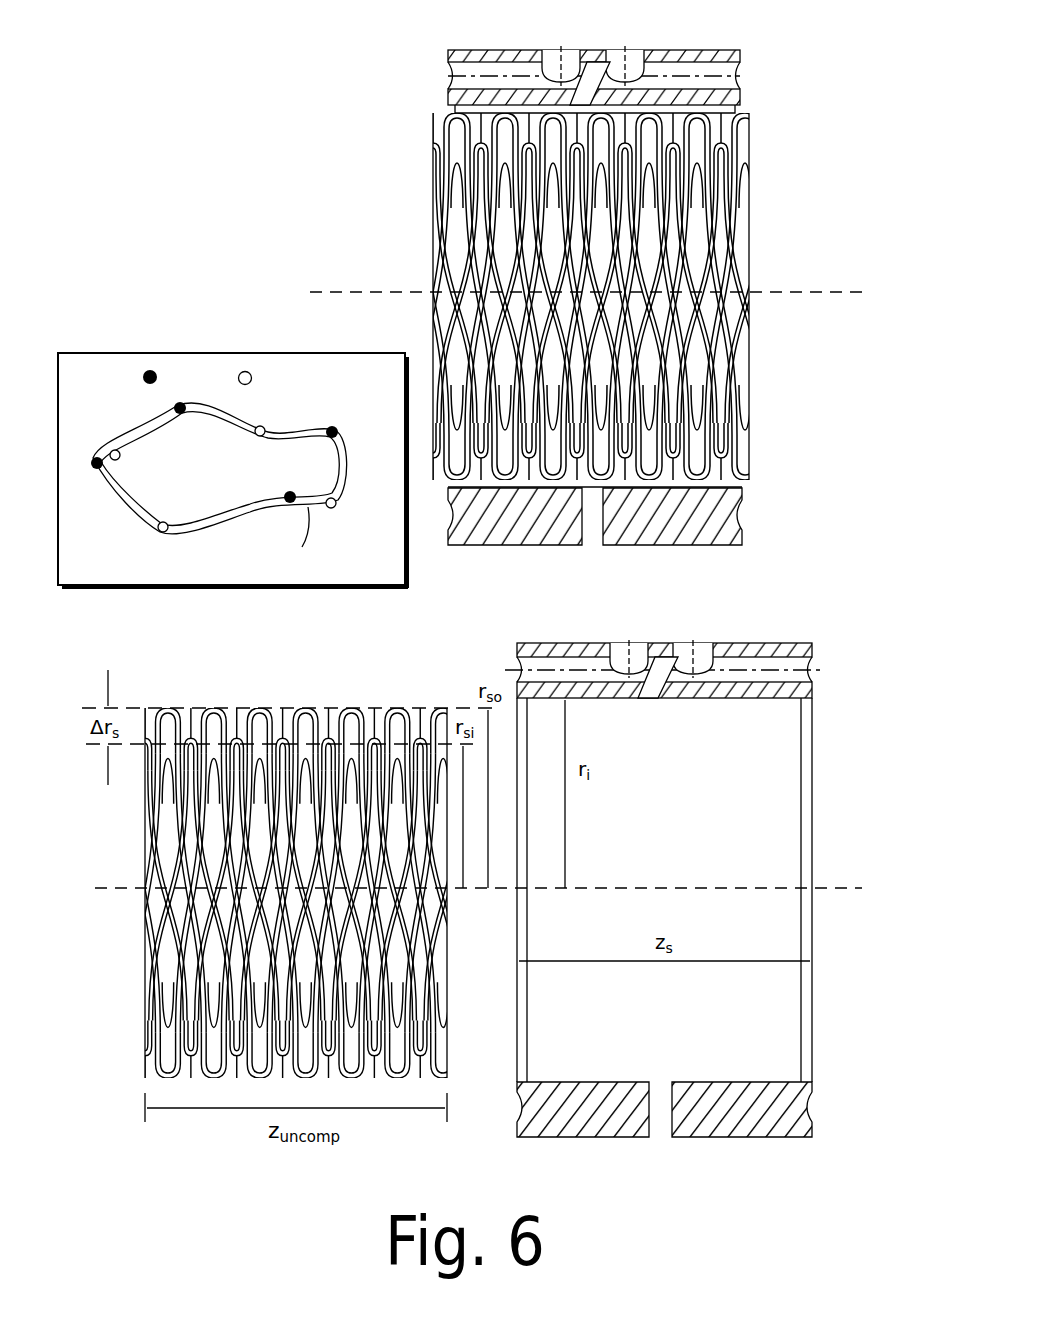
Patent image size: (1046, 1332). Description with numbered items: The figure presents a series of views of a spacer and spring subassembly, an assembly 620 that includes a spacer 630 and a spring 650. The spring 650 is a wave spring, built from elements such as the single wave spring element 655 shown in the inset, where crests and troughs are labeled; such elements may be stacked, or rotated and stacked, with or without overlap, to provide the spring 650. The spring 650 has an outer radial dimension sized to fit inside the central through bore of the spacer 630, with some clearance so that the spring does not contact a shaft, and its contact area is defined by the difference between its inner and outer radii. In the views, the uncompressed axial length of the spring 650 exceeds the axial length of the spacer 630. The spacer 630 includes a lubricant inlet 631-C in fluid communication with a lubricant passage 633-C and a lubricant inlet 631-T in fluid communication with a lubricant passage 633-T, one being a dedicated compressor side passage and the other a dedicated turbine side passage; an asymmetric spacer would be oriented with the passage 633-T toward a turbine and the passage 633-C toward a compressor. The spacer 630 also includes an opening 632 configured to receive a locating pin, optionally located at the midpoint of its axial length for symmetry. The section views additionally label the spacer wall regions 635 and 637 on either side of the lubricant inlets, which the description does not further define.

The assembly 620 is at (383, 35).
The spacer 630 is at (740, 53).
The lubricant inlet 631-C is at (541, 52).
The lubricant inlet 631-T is at (643, 52).
The lubricant passage 633-C is at (518, 72).
The lubricant passage 633-T is at (656, 70).
The outer wall of sleeve 635 is at (448, 88).
The inner wall of sleeve 637 is at (740, 88).
The spring 650 is at (421, 150).
The wave spring element 655 is at (395, 350).
The opening 632 is at (582, 546).